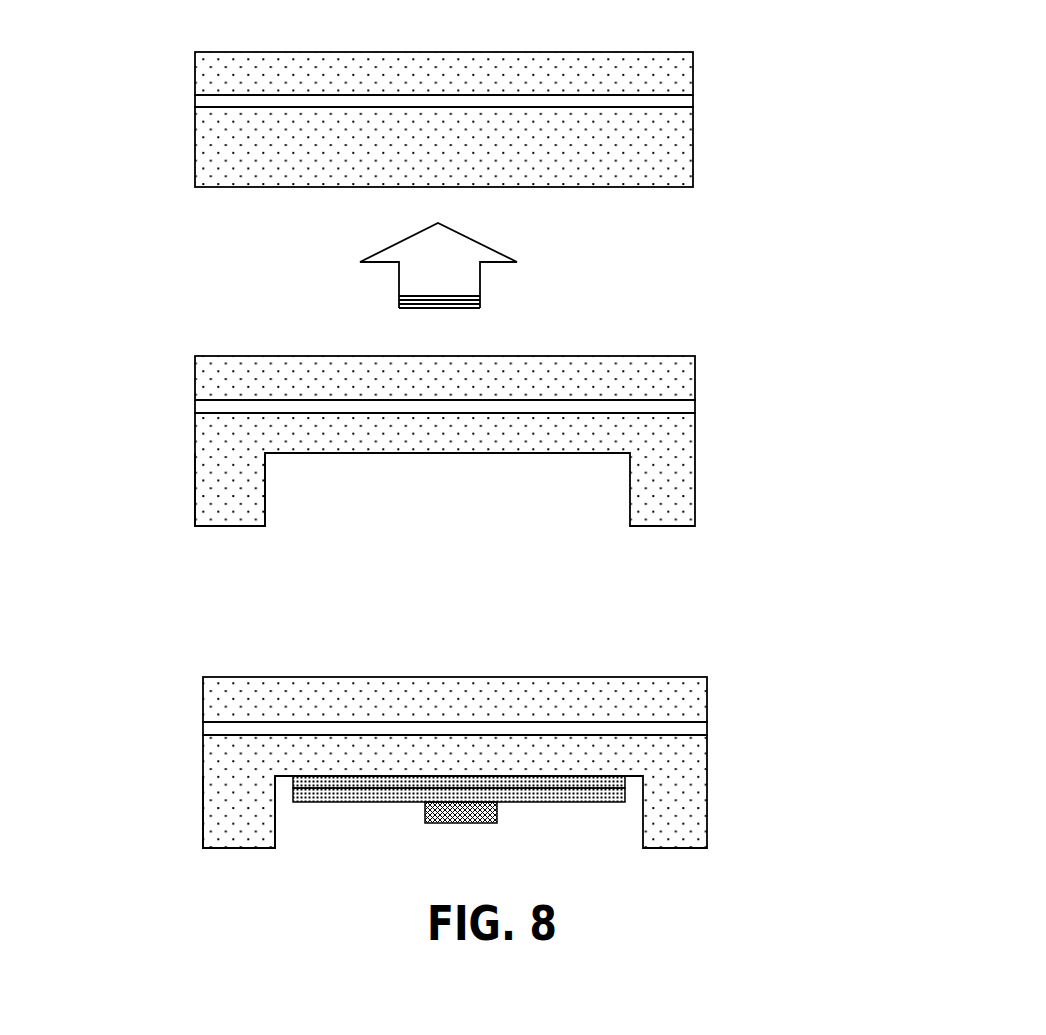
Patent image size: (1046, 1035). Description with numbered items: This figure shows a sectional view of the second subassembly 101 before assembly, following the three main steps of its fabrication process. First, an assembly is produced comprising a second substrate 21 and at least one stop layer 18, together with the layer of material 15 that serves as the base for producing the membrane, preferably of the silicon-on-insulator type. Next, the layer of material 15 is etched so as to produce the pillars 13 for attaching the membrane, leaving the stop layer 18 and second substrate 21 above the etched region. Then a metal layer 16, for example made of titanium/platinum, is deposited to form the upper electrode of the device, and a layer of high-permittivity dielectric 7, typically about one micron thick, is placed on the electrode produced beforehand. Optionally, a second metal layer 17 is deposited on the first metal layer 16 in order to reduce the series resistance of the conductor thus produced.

The second subassembly 101 is at (159, 135).
The second substrate 21 is at (660, 76).
The stop layer 18 is at (665, 100).
The layer of material serving as base for the membrane 15 is at (668, 164).
The support leg 13 is at (210, 503).
The metal layer 16 is at (353, 783).
The second metal layer 17 is at (587, 802).
The layer of high-permittivity dielectric 7 is at (422, 820).